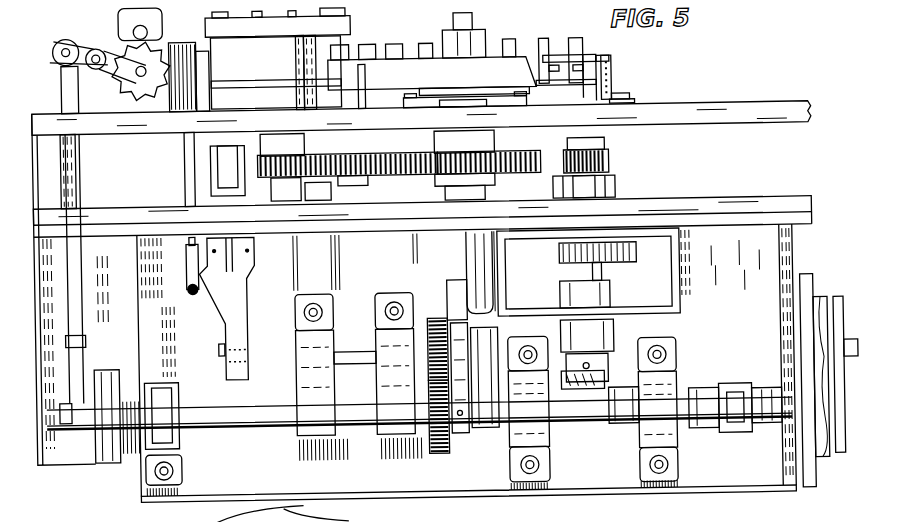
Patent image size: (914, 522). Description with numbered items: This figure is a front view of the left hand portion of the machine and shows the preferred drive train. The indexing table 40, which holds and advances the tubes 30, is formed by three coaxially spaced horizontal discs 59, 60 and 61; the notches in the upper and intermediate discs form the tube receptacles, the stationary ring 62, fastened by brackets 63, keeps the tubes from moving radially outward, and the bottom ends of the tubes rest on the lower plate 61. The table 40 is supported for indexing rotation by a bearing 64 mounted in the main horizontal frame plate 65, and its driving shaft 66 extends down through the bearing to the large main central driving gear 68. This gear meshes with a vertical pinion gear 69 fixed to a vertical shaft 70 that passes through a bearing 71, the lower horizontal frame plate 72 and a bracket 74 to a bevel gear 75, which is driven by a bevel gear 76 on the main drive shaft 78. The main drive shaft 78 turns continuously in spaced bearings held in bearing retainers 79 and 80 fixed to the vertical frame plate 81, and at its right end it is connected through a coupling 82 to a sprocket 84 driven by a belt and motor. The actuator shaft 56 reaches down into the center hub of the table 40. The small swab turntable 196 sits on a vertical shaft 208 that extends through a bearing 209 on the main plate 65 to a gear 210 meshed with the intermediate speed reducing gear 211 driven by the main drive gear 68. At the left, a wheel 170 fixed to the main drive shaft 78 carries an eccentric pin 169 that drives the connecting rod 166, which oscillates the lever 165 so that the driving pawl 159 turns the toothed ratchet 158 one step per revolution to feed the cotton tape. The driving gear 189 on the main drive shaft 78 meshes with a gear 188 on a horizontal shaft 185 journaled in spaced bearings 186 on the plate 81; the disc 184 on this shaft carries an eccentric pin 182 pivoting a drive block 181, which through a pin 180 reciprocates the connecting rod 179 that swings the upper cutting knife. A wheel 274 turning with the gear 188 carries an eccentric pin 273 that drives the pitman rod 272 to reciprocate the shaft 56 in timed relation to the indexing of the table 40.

The tube 30 is at (371, 43).
The table 40 is at (536, 49).
The shaft 56 is at (476, 18).
The upper disc 59 is at (603, 57).
The intermediate disc 60 is at (613, 72).
The lower plate 61 is at (620, 99).
The stationary ring 62 is at (413, 62).
The bracket 63 is at (364, 81).
The bearing 64 is at (440, 98).
The main horizontal frame plate 65 is at (744, 112).
The driving shaft 66 is at (507, 146).
The main central driving gear 68 is at (512, 176).
The vertical pinion gear 69 is at (610, 160).
The vertical shaft 70 is at (610, 172).
The bearing 71 is at (585, 189).
The lower horizontal frame plate 72 is at (720, 205).
The bracket 74 is at (612, 294).
The bevel gear 75 is at (583, 400).
The bevel gear 76 is at (615, 425).
The main drive shaft 78 is at (217, 426).
The bearing retainer 79 is at (513, 433).
The bearing retainer 80 is at (672, 449).
The vertical frame plate 81 is at (713, 365).
The coupling 82 is at (750, 432).
The sprocket 84 is at (826, 465).
The toothed ratchet 158 is at (135, 88).
The driving pawl 159 is at (112, 45).
The lever 165 is at (63, 38).
The connecting rod 166 is at (70, 82).
The pin 169 is at (62, 411).
The wheel 170 is at (106, 462).
The connecting rod 179 is at (190, 172).
The pin 180 is at (186, 281).
The drive block 181 is at (247, 282).
The eccentric pin 182 is at (218, 345).
The wheel 184 is at (260, 332).
The horizontal shaft 185 is at (358, 350).
The bearings 186 is at (417, 308).
The gear 188 is at (432, 317).
The driving gear 189 is at (430, 457).
The small turntable 196 is at (355, 23).
The vertical shaft 208 is at (303, 144).
The bearing 209 is at (268, 75).
The gear 210 is at (301, 189).
The intermediate speed reducing gear 211 is at (356, 177).
The pitman rod 272 is at (483, 337).
The pin 273 is at (488, 375).
The wheel 274 is at (428, 365).